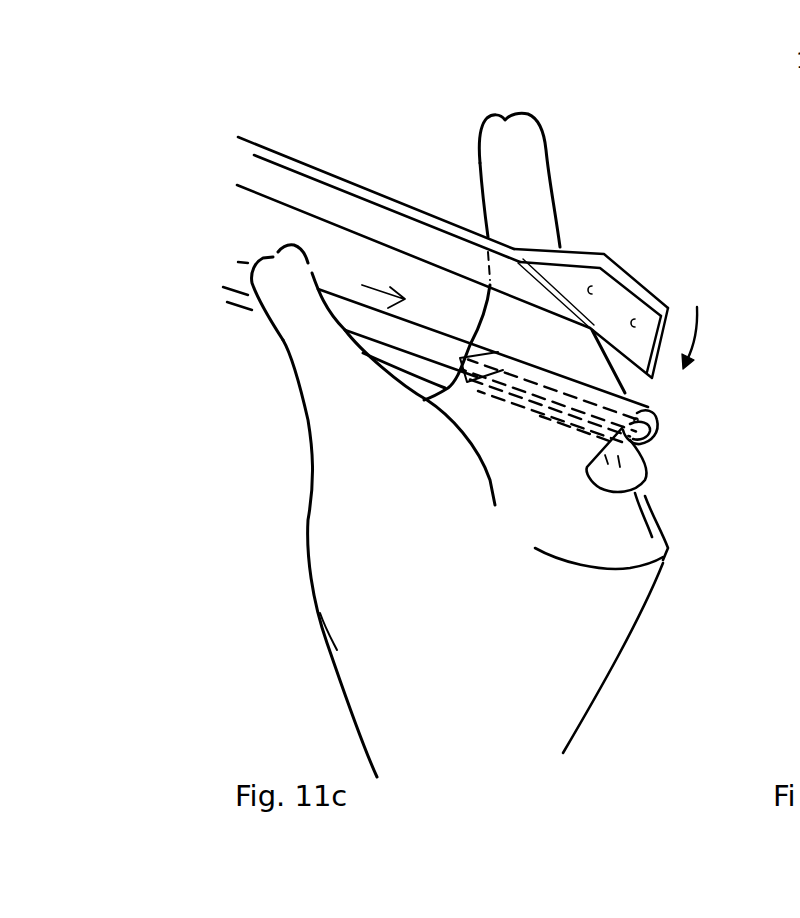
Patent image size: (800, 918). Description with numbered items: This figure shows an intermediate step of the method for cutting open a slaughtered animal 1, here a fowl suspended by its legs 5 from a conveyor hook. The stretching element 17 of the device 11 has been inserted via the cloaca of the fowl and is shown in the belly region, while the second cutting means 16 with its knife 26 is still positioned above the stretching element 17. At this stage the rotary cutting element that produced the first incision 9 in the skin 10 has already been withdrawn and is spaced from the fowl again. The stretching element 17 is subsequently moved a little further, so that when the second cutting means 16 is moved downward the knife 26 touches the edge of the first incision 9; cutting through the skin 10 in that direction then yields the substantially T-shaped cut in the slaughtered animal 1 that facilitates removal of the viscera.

The slaughtered animal 1 is at (280, 721).
The leg 5 is at (353, 502).
The first incision 9 is at (643, 472).
The skin 10 is at (607, 527).
The device 11 is at (206, 146).
The second cutting means 16 is at (355, 208).
The stretching element 17 is at (663, 417).
The knife 26 is at (636, 312).